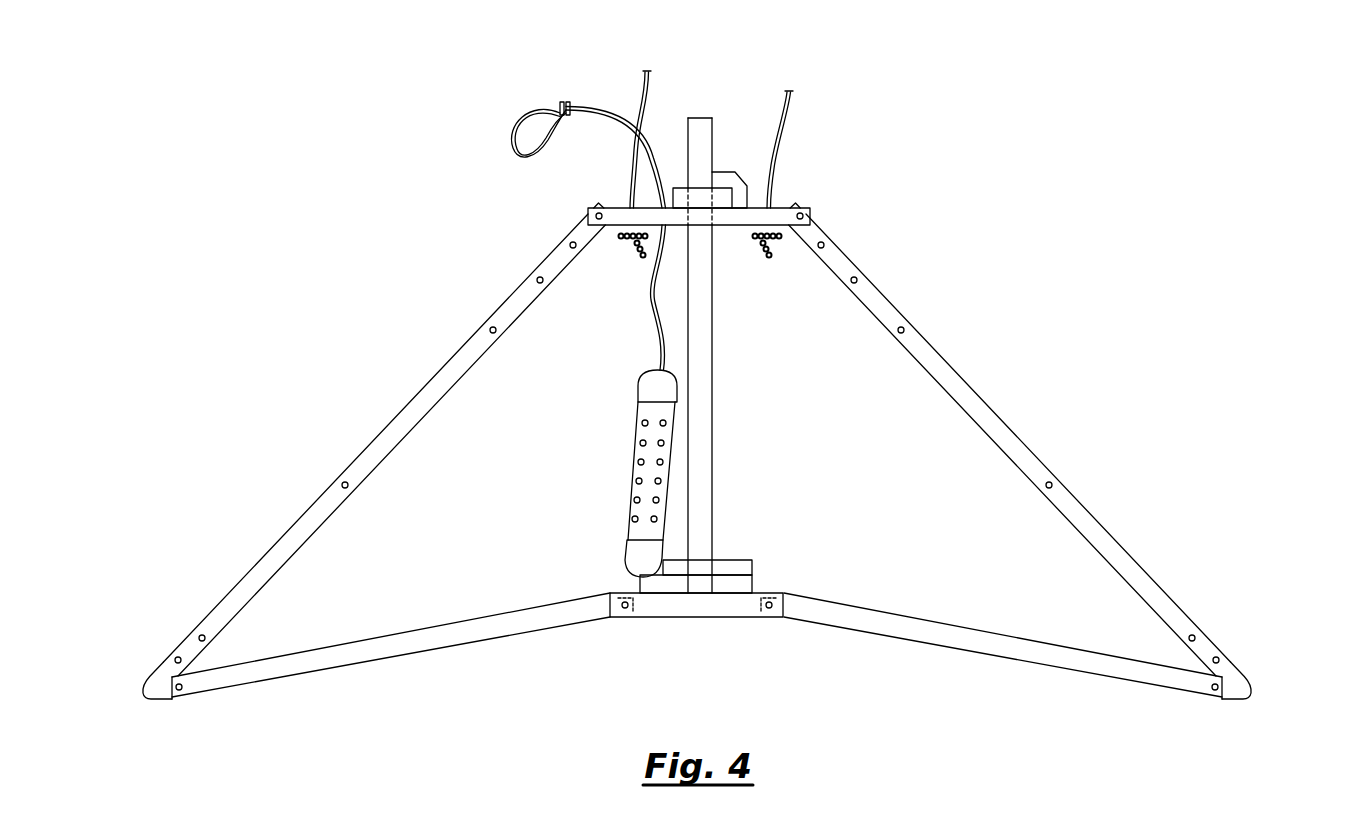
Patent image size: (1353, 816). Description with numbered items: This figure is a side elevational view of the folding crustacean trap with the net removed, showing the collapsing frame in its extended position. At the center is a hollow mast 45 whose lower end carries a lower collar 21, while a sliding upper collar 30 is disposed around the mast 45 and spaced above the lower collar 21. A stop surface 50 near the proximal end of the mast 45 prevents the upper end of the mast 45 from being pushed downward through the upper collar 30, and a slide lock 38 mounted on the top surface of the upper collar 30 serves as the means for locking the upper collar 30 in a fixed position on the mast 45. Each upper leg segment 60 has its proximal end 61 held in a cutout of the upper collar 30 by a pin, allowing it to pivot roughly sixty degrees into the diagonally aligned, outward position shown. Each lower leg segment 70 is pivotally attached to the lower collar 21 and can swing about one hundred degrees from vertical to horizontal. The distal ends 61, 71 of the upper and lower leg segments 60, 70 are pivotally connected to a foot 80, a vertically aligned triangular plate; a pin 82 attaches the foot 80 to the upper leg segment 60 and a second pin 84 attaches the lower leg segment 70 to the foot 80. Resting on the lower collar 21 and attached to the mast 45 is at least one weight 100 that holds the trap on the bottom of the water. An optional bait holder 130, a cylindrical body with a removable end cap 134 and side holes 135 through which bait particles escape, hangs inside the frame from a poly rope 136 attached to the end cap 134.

The lower collar 21 is at (698, 619).
The upper collar 30 is at (736, 228).
The slide lock 38 is at (741, 181).
The hollow mast 45 is at (713, 116).
The stop surface 50 is at (677, 188).
The upper leg segment 60 is at (686, 439).
The proximal end of upper leg segment 61 is at (190, 648).
The lower leg segment 70 is at (697, 673).
The distal end of lower leg segment 71 is at (200, 687).
The foot 80 is at (703, 699).
The pin 82 is at (173, 659).
The second pin 84 is at (183, 693).
The weight 100 is at (724, 557).
The bait holder 130 is at (644, 470).
The end cap 134 is at (664, 388).
The holes 135 is at (637, 497).
The poly rope 136 is at (652, 305).